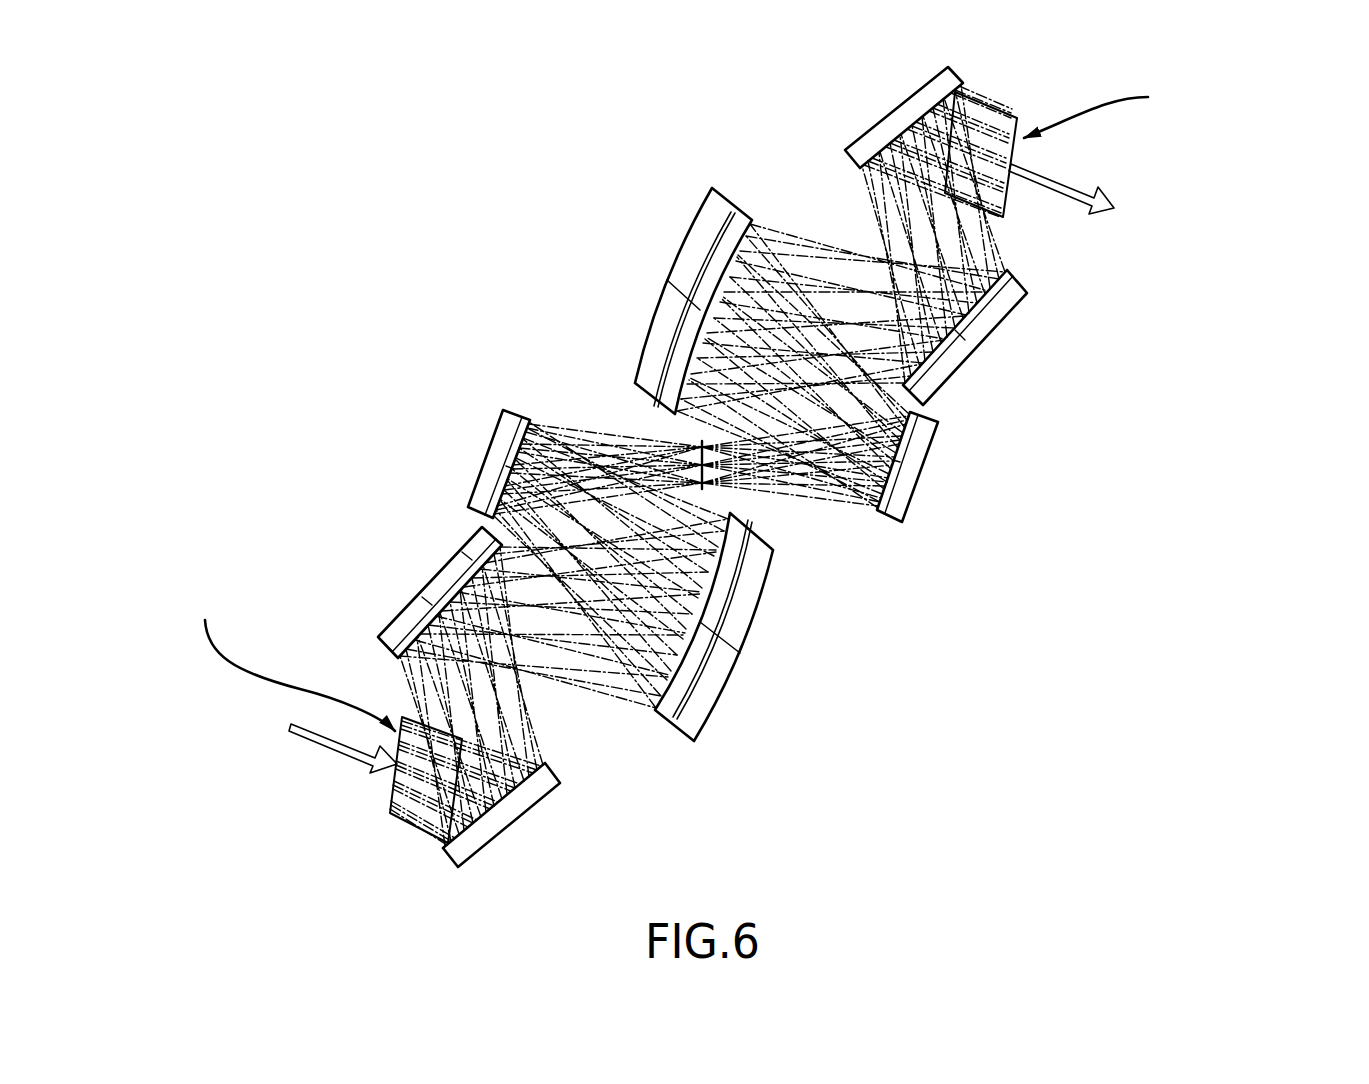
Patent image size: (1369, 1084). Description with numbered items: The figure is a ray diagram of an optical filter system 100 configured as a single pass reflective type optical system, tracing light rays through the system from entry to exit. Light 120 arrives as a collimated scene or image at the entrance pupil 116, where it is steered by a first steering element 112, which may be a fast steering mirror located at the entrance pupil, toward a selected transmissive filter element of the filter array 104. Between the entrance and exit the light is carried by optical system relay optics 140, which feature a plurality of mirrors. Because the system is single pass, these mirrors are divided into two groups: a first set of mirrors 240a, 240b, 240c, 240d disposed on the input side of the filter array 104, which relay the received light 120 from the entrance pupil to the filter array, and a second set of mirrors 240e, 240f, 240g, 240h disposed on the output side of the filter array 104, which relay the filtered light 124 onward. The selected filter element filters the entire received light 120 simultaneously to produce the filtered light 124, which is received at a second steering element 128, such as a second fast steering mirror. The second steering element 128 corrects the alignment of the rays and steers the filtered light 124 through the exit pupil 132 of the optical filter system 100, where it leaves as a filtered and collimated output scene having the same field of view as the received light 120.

The optical filter system 100 is at (479, 179).
The filter array 104 is at (698, 441).
The first steering element 112 is at (392, 803).
The entrance pupil 116 is at (398, 730).
The received light 120 is at (296, 730).
The filtered light 124 is at (1108, 207).
The second steering element 128 is at (1012, 115).
The exit pupil 132 is at (1010, 190).
The optical system relay optics 140 is at (738, 777).
The mirror 240a is at (492, 822).
The mirror 240b is at (458, 580).
The mirror 240c is at (726, 658).
The mirror 240d is at (497, 477).
The mirror 240e is at (905, 462).
The mirror 240f is at (681, 268).
The mirror 240g is at (957, 348).
The mirror 240h is at (888, 128).